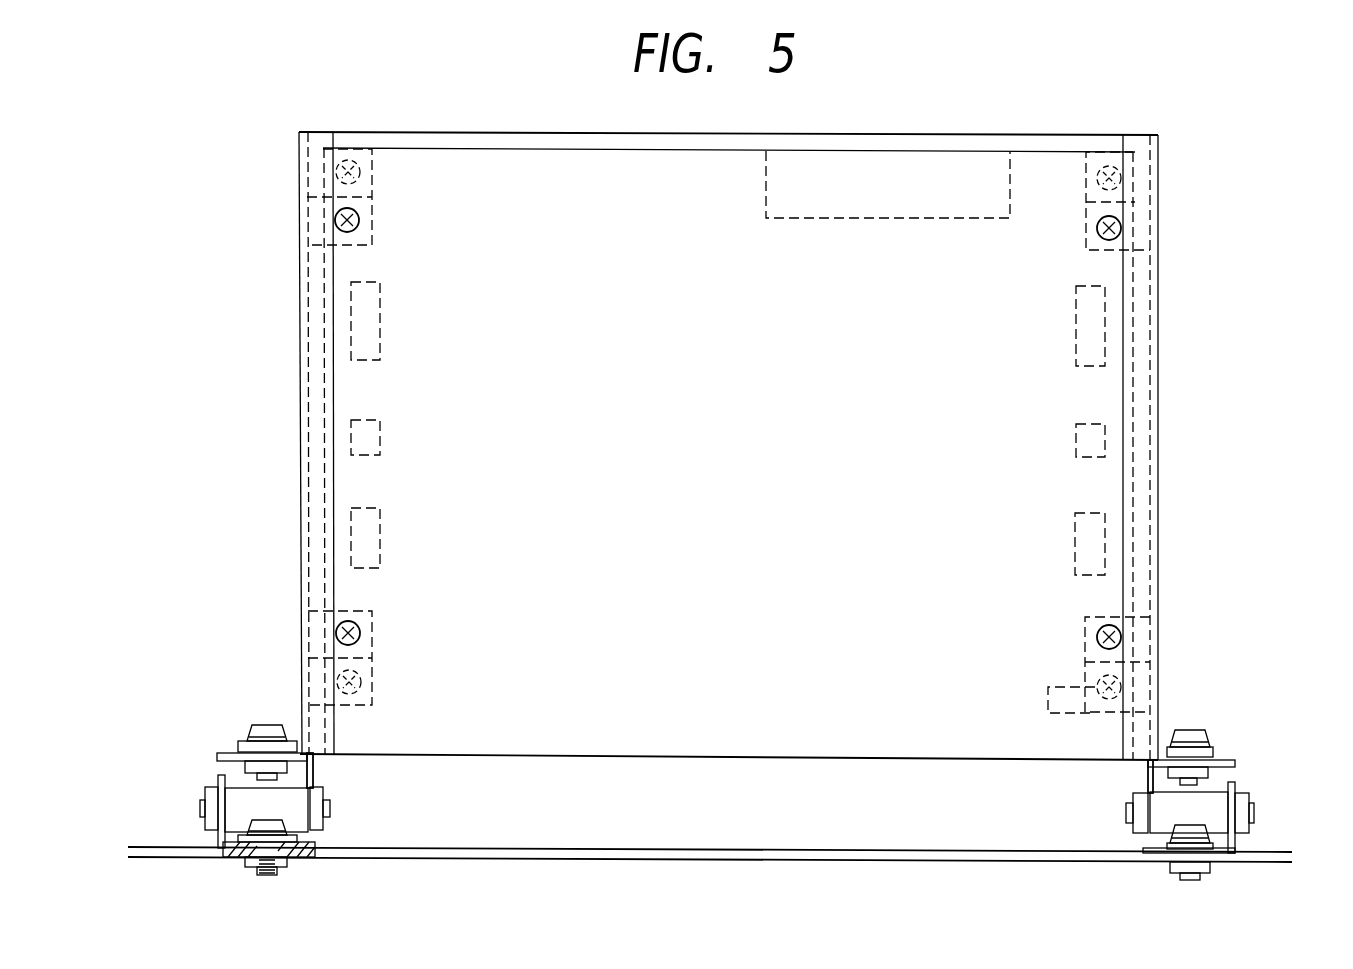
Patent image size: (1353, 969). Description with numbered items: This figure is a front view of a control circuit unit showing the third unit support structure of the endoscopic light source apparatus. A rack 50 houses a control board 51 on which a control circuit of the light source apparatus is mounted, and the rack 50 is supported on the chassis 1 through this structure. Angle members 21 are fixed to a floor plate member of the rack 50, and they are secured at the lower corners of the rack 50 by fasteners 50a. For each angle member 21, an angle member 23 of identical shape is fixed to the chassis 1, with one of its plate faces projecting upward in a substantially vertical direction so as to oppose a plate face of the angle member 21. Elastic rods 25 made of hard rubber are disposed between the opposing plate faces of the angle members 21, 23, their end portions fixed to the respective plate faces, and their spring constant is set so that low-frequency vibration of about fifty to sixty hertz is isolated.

The chassis 1 is at (688, 861).
The angle member 21 is at (217, 757).
The angle member 23 is at (220, 838).
The elastic rod 25 is at (288, 797).
The rack 50 is at (1158, 415).
The fixing bolt 50a is at (238, 745).
The control board 51 is at (1052, 492).